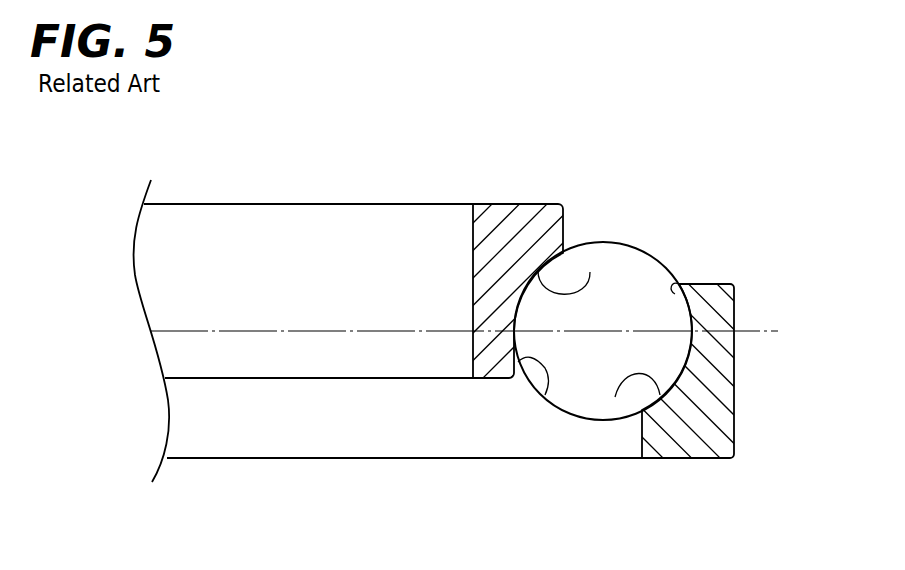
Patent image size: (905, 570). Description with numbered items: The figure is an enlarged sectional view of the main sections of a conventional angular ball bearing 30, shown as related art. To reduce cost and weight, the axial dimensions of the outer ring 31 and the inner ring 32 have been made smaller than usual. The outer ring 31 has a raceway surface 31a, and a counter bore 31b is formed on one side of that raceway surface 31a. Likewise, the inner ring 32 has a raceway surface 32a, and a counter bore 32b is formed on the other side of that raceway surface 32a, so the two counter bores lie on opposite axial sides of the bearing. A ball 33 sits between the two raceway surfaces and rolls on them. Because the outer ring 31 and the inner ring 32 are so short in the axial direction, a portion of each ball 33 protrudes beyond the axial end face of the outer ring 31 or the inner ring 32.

The angular ball bearing 30 is at (725, 193).
The outer ring 31 is at (706, 376).
The raceway surface 31a is at (615, 397).
The counter bore 31b is at (676, 281).
The inner ring 32 is at (495, 297).
The raceway surface 32a is at (590, 272).
The counter bore 32b is at (545, 395).
The ball 33 is at (627, 283).